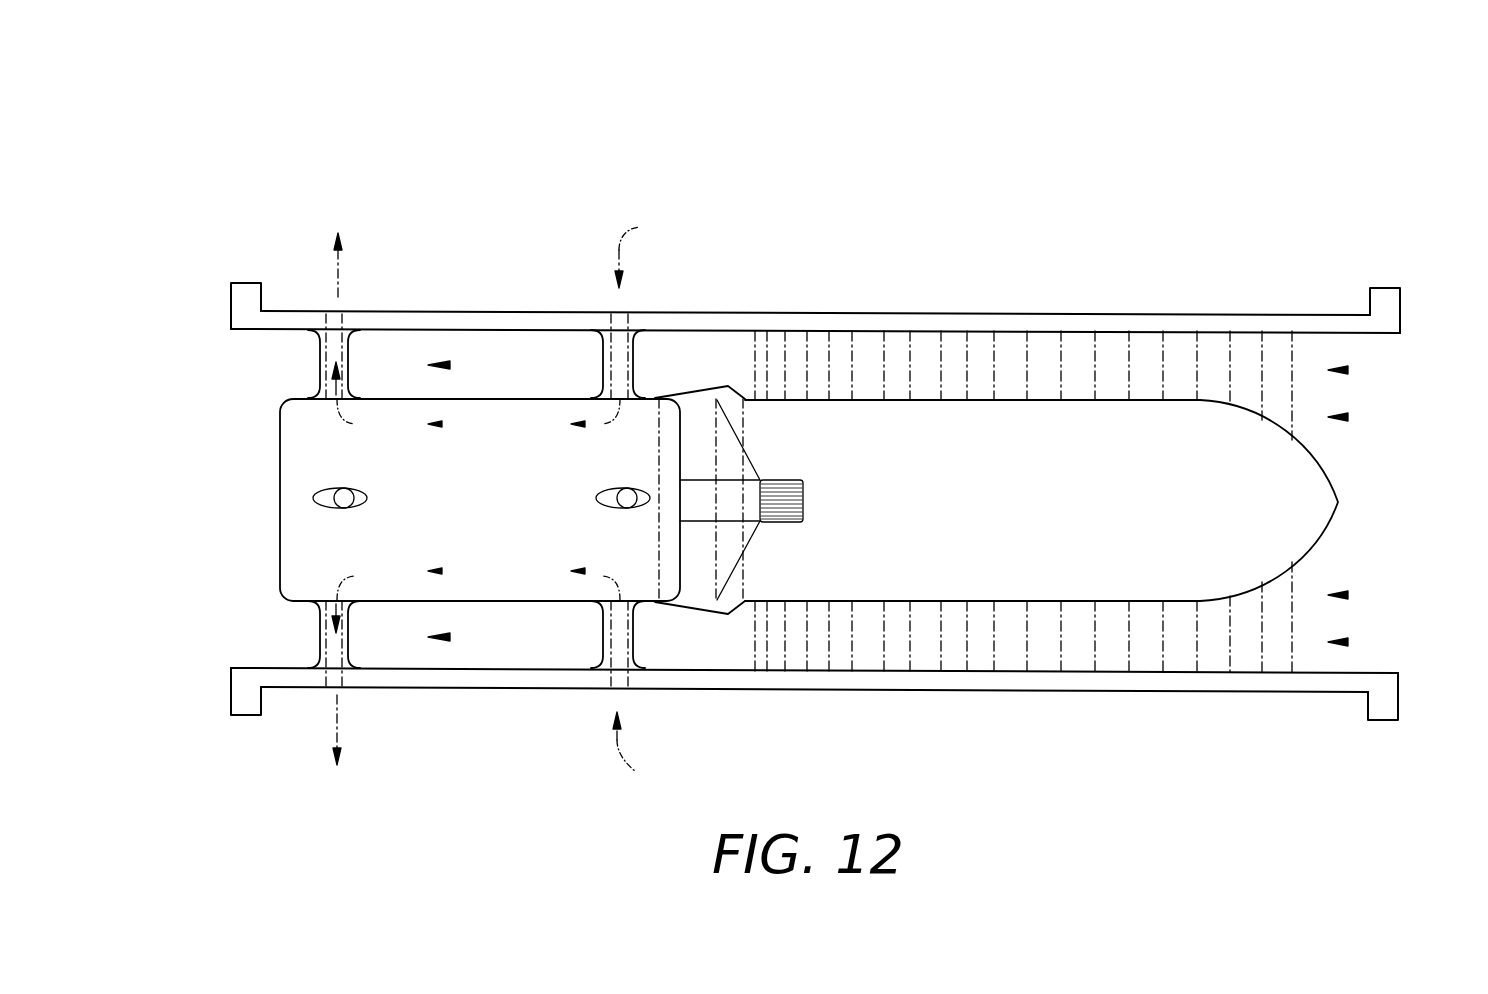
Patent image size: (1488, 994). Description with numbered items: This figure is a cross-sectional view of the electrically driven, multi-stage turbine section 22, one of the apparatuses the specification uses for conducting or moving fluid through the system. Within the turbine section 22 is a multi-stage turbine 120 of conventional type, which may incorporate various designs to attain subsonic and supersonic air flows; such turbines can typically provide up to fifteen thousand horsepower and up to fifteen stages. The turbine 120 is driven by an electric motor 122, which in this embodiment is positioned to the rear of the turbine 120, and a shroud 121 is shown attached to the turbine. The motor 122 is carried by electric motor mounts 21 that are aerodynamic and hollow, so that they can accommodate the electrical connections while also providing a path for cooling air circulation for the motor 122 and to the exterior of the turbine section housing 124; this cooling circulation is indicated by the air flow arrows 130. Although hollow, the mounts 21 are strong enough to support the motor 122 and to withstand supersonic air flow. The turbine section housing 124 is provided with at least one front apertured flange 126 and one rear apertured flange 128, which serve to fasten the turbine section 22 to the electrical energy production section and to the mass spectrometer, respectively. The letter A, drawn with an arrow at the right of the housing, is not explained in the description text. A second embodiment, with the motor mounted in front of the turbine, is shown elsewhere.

The multi-stage turbine section 22 is at (988, 182).
The electric motor mounts 21 is at (603, 636).
The multi-stage turbine 120 is at (838, 515).
The shroud 121 is at (706, 388).
The electric motor 122 is at (560, 518).
The turbine section housing 124 is at (1000, 320).
The front apertured flange 126 is at (1388, 288).
The rear apertured flange 128 is at (245, 716).
The air flow arrows 130 is at (338, 268).
The direction A is at (1380, 595).